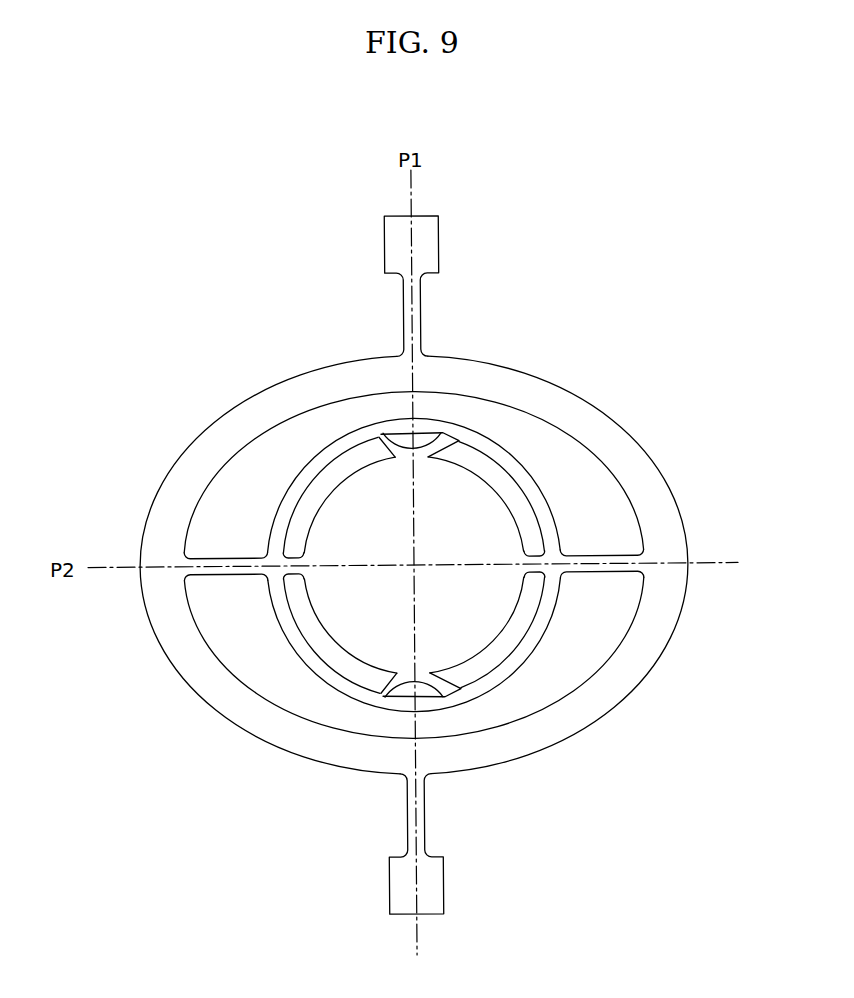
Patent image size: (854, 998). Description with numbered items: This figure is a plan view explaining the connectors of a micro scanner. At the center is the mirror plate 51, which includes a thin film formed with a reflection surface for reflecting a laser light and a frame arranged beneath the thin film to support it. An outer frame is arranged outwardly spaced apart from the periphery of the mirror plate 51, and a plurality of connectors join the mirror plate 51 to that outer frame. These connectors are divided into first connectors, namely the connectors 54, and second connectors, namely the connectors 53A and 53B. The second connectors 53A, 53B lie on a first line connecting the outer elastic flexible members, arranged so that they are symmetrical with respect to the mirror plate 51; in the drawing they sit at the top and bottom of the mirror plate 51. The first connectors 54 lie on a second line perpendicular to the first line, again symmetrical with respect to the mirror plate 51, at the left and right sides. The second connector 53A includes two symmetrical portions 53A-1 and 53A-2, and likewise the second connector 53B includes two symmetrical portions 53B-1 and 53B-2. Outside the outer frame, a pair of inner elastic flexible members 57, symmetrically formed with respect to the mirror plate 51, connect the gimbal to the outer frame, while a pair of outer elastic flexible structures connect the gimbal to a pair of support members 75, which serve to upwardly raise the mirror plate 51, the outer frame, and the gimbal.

The mirror plate 51 is at (477, 513).
The second connector 53A is at (524, 357).
The symmetrical portion of second connector 53A-1 is at (393, 448).
The symmetrical portion of second connector 53A-2 is at (462, 446).
The second connector 53B is at (528, 776).
The symmetrical portion of second connector 53B-1 is at (405, 682).
The symmetrical portion of second connector 53B-2 is at (458, 682).
The first connector 54 is at (292, 556).
The inner elastic flexible member 57 is at (237, 575).
The support member 75 is at (427, 233).